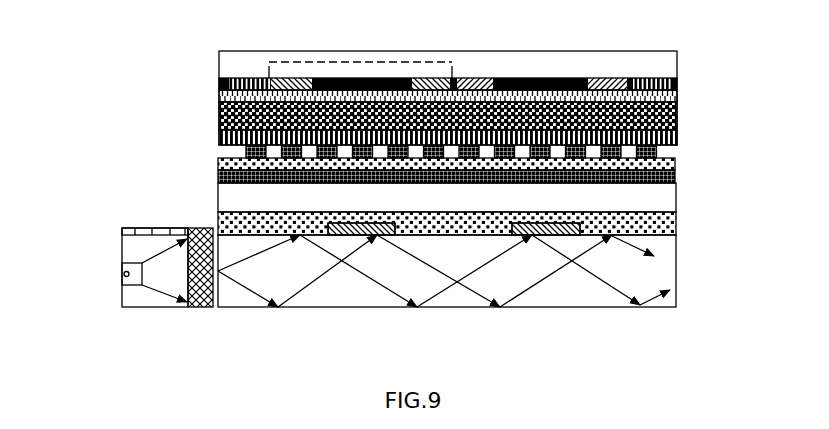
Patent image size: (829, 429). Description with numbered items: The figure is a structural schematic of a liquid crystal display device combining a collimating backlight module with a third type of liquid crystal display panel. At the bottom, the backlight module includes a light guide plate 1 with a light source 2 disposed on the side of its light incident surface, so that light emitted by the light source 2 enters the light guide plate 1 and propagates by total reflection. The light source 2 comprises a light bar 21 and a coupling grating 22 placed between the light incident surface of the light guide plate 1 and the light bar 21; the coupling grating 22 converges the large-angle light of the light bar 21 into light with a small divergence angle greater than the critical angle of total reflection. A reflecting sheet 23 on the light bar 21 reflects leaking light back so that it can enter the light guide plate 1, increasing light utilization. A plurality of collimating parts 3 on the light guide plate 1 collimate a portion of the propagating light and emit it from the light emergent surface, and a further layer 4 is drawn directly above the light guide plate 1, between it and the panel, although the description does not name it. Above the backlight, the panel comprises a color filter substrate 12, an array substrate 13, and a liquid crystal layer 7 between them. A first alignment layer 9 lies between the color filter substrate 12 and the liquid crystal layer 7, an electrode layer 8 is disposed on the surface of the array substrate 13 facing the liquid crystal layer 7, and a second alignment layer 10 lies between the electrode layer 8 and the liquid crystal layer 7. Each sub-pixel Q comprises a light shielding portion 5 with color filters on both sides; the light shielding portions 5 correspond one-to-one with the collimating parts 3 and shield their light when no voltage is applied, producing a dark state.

The light guide plate 1 is at (677, 272).
The light source 2 is at (144, 230).
The collimating parts 3 is at (565, 227).
The diffusion layer 4 is at (677, 228).
The light shielding portion 5 is at (545, 78).
The liquid crystal layer 7 is at (677, 115).
The electrode layer 8 is at (677, 146).
The first alignment layer 9 is at (677, 93).
The second alignment layer 10 is at (677, 139).
The color filter substrate 12 is at (677, 67).
The array substrate 13 is at (677, 196).
The light bar 21 is at (123, 264).
The coupling grating 22 is at (185, 249).
The reflecting sheet 23 is at (153, 228).
The sub-pixel Q is at (373, 62).